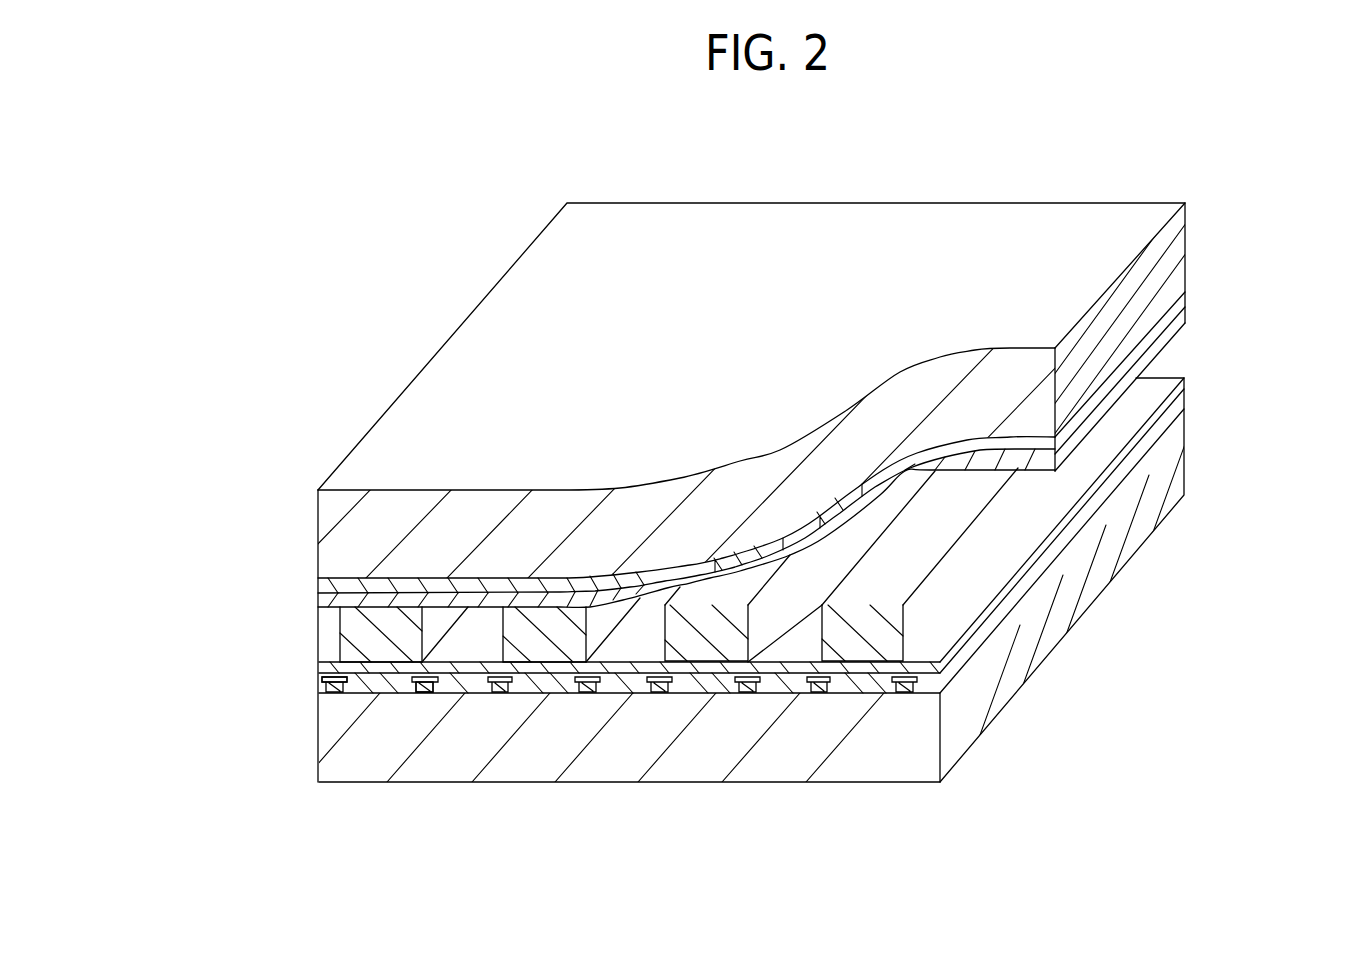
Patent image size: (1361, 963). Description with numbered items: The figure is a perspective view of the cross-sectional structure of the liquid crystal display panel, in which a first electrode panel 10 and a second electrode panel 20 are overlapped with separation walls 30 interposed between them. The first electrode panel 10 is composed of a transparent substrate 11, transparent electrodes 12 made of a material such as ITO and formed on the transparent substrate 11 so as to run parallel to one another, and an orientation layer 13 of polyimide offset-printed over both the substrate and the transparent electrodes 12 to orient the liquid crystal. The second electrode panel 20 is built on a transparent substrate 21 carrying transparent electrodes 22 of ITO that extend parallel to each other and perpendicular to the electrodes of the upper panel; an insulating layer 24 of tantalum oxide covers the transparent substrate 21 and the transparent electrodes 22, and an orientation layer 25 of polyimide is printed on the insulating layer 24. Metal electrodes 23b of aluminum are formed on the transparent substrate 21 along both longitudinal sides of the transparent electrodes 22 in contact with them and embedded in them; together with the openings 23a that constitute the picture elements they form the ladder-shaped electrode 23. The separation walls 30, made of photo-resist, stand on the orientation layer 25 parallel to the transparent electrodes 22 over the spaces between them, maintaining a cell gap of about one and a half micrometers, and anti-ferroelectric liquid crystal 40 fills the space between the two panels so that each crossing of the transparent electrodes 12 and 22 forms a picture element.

The first electrode panel 10 is at (784, 449).
The transparent substrate 11 is at (1140, 214).
The transparent electrodes 12 is at (1183, 303).
The orientation layer 13 is at (1163, 355).
The second electrode panel 20 is at (733, 640).
The transparent substrate 21 is at (749, 752).
The transparent electrodes 22 is at (623, 686).
The ladder-shaped electrode 23 is at (332, 686).
The openings 23a is at (370, 697).
The metal electrodes 23b is at (421, 697).
The insulating layer 24 is at (874, 683).
The orientation layer 25 is at (548, 668).
The separation walls 30 is at (352, 633).
The anti-ferroelectric liquid crystal 40 is at (477, 648).